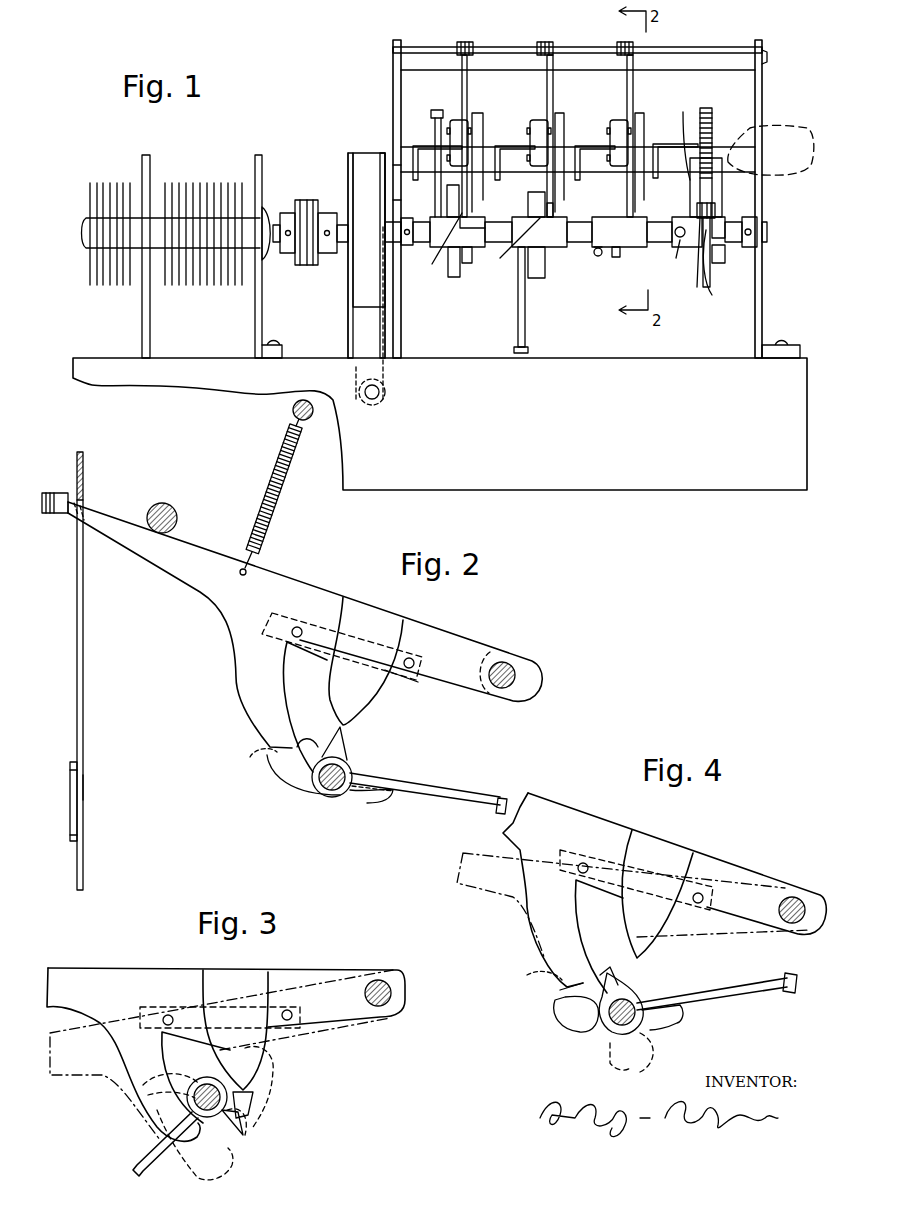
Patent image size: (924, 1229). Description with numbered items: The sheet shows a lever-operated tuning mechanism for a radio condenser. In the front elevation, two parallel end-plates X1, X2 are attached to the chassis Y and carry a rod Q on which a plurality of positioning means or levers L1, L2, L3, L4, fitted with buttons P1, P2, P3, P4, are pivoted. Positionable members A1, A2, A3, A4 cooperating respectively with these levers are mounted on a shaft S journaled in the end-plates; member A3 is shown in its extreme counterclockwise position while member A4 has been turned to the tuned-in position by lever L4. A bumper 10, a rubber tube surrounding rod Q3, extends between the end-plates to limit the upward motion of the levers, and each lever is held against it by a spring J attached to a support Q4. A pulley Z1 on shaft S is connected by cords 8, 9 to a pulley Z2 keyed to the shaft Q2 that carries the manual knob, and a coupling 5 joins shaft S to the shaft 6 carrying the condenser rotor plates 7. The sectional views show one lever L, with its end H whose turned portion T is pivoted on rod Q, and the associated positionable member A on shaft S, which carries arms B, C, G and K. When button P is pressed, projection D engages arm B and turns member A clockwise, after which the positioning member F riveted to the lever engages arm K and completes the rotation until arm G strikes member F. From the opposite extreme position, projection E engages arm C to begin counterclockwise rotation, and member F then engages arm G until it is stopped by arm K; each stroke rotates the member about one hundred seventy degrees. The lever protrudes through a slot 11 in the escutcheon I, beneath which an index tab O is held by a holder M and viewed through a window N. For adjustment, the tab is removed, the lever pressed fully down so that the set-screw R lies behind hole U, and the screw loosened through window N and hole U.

In FIG. 1, the rotor plates 7 is at (186, 256).
In FIG. 1, the shaft 6 is at (268, 212).
In FIG. 1, the coupling 5 is at (304, 200).
In FIG. 1, the shaft S is at (343, 224).
In FIG. 2, the shaft S is at (346, 773).
In FIG. 3, the shaft S is at (220, 1116).
In FIG. 4, the shaft S is at (602, 1036).
In FIG. 1, the pulley Z1 is at (370, 153).
In FIG. 1, the cord 8 is at (348, 325).
In FIG. 1, the cord 9 is at (384, 327).
In FIG. 1, the rod Q is at (394, 168).
In FIG. 2, the rod Q is at (516, 686).
In FIG. 3, the rod Q is at (400, 994).
In FIG. 4, the rod Q is at (795, 897).
In FIG. 1, the pulley Z2 is at (386, 400).
In FIG. 1, the shaft Q2 is at (368, 400).
In FIG. 1, the chassis Y is at (440, 424).
In FIG. 1, the end-plate X1 is at (393, 96).
In FIG. 1, the end-plate X2 is at (765, 83).
In FIG. 1, the bumper 10 is at (688, 53).
In FIG. 2, the bumper 10 is at (168, 507).
In FIG. 1, the rod Q3 is at (768, 55).
In FIG. 2, the rod Q3 is at (178, 517).
In FIG. 2, the support Q4 is at (293, 411).
In FIG. 1, the button P1 is at (464, 42).
In FIG. 1, the button P2 is at (544, 42).
In FIG. 1, the button P3 is at (624, 42).
In FIG. 1, the button P4 is at (716, 210).
In FIG. 1, the positioning means L1 is at (470, 82).
In FIG. 1, the positioning means L2 is at (553, 82).
In FIG. 1, the positioning means L3 is at (633, 82).
In FIG. 1, the positioning means L4 is at (712, 280).
In FIG. 1, the set-screw R is at (436, 110).
In FIG. 2, the set-screw R is at (502, 798).
In FIG. 3, the set-screw R is at (140, 1162).
In FIG. 4, the set-screw R is at (790, 975).
In FIG. 1, the positioning member F is at (458, 120).
In FIG. 2, the positioning member F is at (307, 663).
In FIG. 3, the positioning member F is at (192, 1042).
In FIG. 4, the positioning member F is at (589, 921).
In FIG. 1, the end H is at (416, 144).
In FIG. 2, the end H is at (508, 661).
In FIG. 1, the arm G is at (446, 201).
In FIG. 2, the arm G is at (376, 806).
In FIG. 3, the arm G is at (150, 1088).
In FIG. 4, the arm G is at (690, 1015).
In FIG. 1, the projection D is at (485, 191).
In FIG. 2, the projection D is at (358, 718).
In FIG. 4, the projection D is at (665, 963).
In FIG. 1, the projection E is at (626, 195).
In FIG. 2, the projection E is at (258, 750).
In FIG. 4, the projection E is at (573, 990).
In FIG. 1, the arm B is at (478, 226).
In FIG. 2, the arm B is at (335, 736).
In FIG. 4, the arm B is at (600, 957).
In FIG. 1, the arm K is at (455, 278).
In FIG. 2, the arm K is at (275, 774).
In FIG. 3, the arm K is at (266, 1058).
In FIG. 4, the arm K is at (556, 1023).
In FIG. 1, the arm C is at (468, 264).
In FIG. 2, the arm C is at (305, 738).
In FIG. 4, the arm C is at (545, 976).
In FIG. 1, the positionable member A1 is at (443, 232).
In FIG. 1, the positionable member A2 is at (526, 232).
In FIG. 1, the positionable member A3 is at (607, 232).
In FIG. 1, the positionable member A4 is at (700, 262).
In FIG. 2, the positionable member A is at (324, 793).
In FIG. 4, the positionable member A is at (662, 1033).
In FIG. 1, the spring J is at (713, 130).
In FIG. 2, the spring J is at (268, 487).
In FIG. 2, the escutcheon I is at (77, 467).
In FIG. 2, the button P is at (63, 495).
In FIG. 2, the operating lever L is at (124, 515).
In FIG. 3, the operating lever L is at (226, 1054).
In FIG. 4, the operating lever L is at (641, 890).
In FIG. 2, the slot 11 is at (77, 648).
In FIG. 2, the window N is at (70, 771).
In FIG. 2, the index tab O is at (70, 802).
In FIG. 2, the hole U is at (85, 785).
In FIG. 2, the holder M is at (72, 842).
In FIG. 2, the turned end T is at (487, 670).